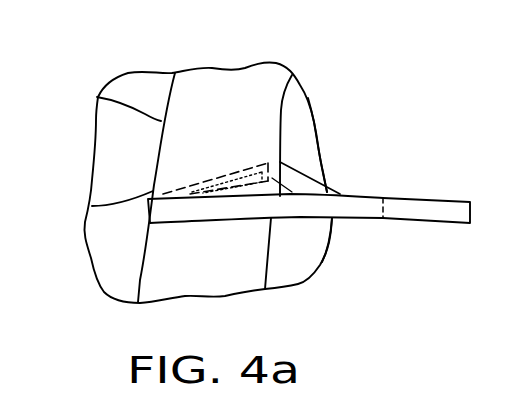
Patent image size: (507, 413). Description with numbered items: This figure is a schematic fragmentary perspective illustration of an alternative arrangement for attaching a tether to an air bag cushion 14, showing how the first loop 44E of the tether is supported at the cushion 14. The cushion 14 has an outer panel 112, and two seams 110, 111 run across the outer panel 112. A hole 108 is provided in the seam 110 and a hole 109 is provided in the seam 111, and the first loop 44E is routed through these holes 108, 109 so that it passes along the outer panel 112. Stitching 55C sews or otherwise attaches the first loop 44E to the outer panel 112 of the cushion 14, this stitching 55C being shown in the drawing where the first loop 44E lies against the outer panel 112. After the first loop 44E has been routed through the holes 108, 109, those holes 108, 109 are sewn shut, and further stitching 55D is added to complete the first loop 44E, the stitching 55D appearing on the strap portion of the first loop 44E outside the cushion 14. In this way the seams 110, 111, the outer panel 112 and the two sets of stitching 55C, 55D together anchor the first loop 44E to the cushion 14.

The cushion 14 is at (288, 93).
The hole 108 is at (92, 206).
The hole 109 is at (282, 140).
The seam 110 is at (97, 97).
The seam 111 is at (273, 102).
The outer panel 112 is at (265, 82).
The first loop 44E is at (293, 193).
The stitching 55C is at (185, 193).
The stitching 55D is at (378, 200).